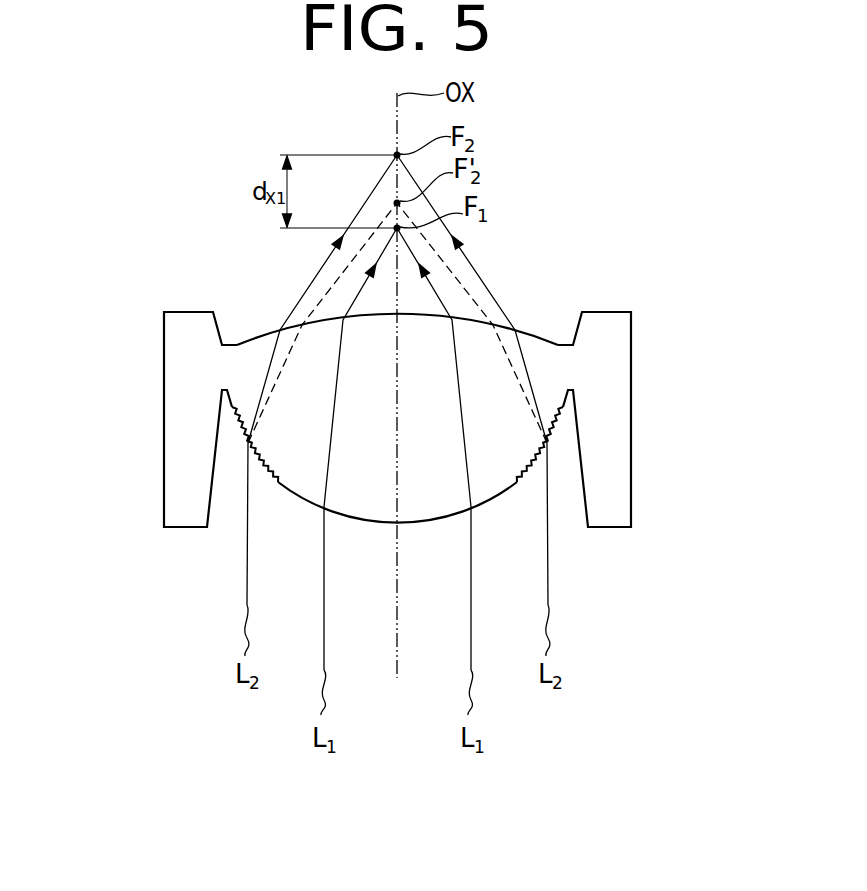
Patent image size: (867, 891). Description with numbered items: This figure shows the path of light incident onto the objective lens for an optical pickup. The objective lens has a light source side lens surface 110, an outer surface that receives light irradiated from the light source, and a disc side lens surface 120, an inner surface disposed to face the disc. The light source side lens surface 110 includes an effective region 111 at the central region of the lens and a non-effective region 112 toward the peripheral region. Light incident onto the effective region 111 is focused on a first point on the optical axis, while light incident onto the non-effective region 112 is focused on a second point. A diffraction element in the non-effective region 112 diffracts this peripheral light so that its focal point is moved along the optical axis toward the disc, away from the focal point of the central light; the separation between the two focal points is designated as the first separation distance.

The light source side lens surface 110 is at (397, 501).
The effective region 111 is at (430, 525).
The non-effective region 112 is at (247, 440).
The disc side lens surface 120 is at (541, 324).